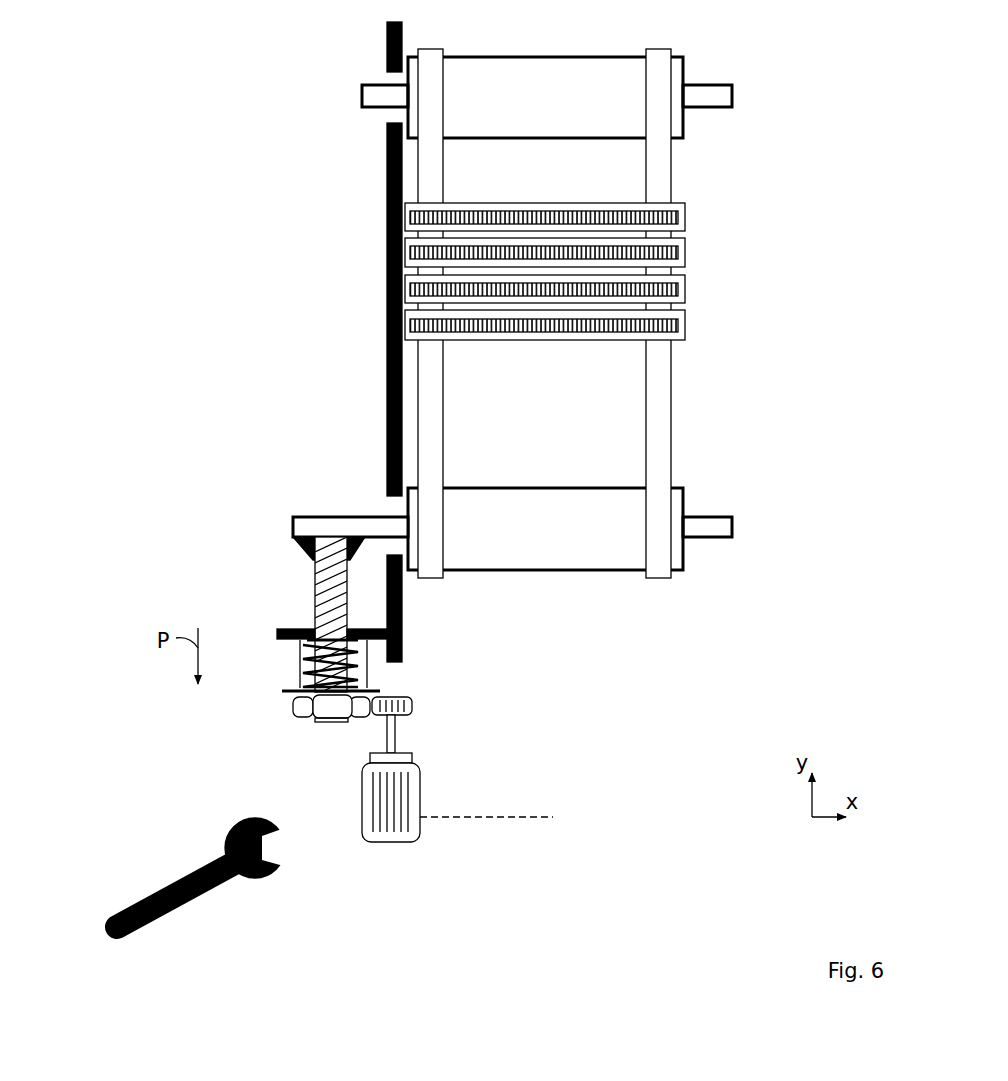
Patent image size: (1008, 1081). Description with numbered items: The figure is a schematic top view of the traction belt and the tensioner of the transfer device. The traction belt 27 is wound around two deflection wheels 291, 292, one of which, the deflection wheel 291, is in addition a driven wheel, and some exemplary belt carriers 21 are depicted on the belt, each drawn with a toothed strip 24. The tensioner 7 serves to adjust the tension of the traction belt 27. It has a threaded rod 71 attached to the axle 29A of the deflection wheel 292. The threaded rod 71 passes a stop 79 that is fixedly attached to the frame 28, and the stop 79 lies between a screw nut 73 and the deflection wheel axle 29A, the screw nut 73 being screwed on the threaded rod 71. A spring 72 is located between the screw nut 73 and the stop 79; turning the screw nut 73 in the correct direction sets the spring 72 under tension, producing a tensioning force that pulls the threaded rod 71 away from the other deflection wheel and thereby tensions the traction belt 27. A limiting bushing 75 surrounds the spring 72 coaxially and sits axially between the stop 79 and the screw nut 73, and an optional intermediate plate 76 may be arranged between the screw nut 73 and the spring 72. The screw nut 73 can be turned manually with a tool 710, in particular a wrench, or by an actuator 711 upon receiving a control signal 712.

The tensioner 7 is at (138, 595).
The belt carrier 21 is at (685, 208).
The toothed strip 24 is at (678, 218).
The traction belt 27 is at (442, 168).
The frame 28 is at (387, 361).
The axle 29A is at (293, 525).
The deflection wheel 291 is at (522, 108).
The deflection wheel 292 is at (522, 543).
The threaded rod 71 is at (315, 582).
The spring 72 is at (300, 655).
The screw nut 73 is at (332, 705).
The limiting bushing 75 is at (300, 675).
The intermediate plate 76 is at (285, 697).
The stop 79 is at (277, 634).
The tool 710 is at (110, 920).
The actuator 711 is at (420, 783).
The control signal 712 is at (548, 815).